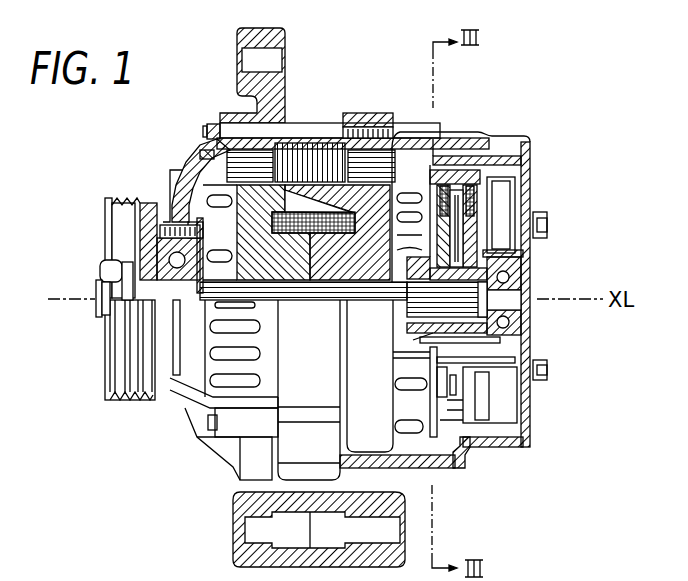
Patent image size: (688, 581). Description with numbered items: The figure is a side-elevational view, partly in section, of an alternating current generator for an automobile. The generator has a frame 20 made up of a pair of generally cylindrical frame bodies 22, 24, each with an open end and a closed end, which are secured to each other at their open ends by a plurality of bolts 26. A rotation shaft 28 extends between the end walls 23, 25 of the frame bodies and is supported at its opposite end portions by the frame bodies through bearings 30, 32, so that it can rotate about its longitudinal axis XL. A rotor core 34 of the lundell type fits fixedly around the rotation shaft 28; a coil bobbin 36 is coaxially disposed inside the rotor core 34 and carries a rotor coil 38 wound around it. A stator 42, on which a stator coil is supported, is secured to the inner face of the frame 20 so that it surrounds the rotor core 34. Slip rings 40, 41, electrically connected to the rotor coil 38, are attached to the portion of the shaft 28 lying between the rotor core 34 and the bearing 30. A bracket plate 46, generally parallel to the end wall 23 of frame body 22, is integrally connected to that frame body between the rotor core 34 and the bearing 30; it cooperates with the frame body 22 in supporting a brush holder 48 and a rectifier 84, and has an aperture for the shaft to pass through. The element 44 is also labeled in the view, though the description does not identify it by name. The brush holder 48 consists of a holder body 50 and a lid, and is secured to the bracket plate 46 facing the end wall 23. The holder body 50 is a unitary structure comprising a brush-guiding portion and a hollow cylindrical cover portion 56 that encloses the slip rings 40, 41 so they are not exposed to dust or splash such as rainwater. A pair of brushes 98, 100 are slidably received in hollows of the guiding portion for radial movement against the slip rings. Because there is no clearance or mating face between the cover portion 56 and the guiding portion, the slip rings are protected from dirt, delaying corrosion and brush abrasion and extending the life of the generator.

The frame 20 is at (410, 137).
The frame body 22 is at (487, 157).
The end wall 23 is at (520, 188).
The frame body 24 is at (222, 463).
The end wall 25 is at (170, 190).
The bolts 26 is at (255, 133).
The rotation shaft 28 is at (297, 293).
The bearing 30 is at (520, 280).
The bearing 32 is at (147, 263).
The rotor core 34 is at (315, 143).
The coil bobbin 36 is at (340, 187).
The rotor coil 38 is at (313, 240).
The slip ring 40 is at (520, 337).
The slip ring 41 is at (520, 353).
The stator 42 is at (297, 137).
The housing bolt 44 is at (210, 157).
The bracket plate 46 is at (423, 213).
The brush holder 48 is at (450, 173).
The holder body 50 is at (483, 212).
The cylindrical cover portion 56 is at (440, 358).
The rectifier 84 is at (480, 402).
The brush 98 is at (520, 255).
The brush 100 is at (432, 277).